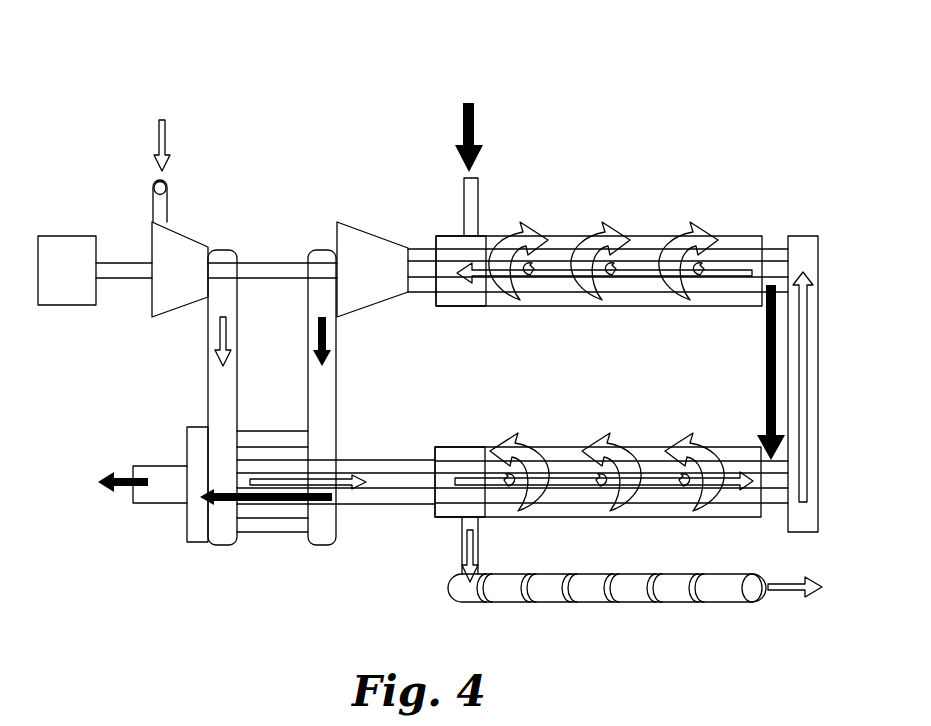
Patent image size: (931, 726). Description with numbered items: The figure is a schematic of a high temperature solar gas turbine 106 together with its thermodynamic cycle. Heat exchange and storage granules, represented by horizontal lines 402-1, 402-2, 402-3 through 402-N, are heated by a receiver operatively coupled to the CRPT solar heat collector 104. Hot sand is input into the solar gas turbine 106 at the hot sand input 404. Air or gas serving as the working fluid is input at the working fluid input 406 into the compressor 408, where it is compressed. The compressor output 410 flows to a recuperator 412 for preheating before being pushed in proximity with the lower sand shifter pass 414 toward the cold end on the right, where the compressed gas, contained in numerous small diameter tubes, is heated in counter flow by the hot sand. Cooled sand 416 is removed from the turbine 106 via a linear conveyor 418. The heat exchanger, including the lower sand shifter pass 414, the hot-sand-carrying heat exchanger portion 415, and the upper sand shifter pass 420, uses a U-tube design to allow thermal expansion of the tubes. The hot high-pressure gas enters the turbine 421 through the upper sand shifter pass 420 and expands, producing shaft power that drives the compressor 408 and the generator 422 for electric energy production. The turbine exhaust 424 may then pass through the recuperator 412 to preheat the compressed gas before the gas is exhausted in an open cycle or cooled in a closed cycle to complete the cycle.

The high temperature solar gas turbine 106 is at (654, 88).
The CRPT solar heat collector 104 is at (480, 215).
The heat exchange and storage granule 402-1 is at (450, 240).
The heat exchange and storage granule 402-2 is at (482, 270).
The heat exchange and storage granule 402-3 is at (470, 450).
The heat exchange and storage granule 402-N is at (483, 508).
The hot sand input 404 is at (460, 112).
The working fluid input 406 is at (157, 135).
The compressor 408 is at (152, 245).
The compressor output 410 is at (207, 367).
The recuperator 412 is at (266, 520).
The lower sand shifter pass 414 is at (560, 445).
The heat exchanger portion carrying hot sand 415 is at (760, 332).
The cooled sand 416 is at (785, 592).
The linear conveyor 418 is at (622, 605).
The upper sand shifter pass 420 is at (652, 238).
The turbine 421 is at (345, 228).
The generator 422 is at (70, 305).
The turbine exhaust 424 is at (130, 488).